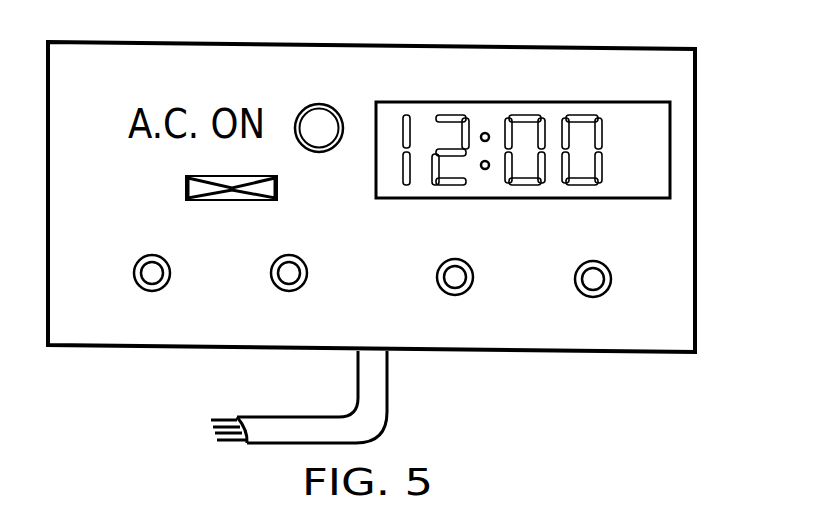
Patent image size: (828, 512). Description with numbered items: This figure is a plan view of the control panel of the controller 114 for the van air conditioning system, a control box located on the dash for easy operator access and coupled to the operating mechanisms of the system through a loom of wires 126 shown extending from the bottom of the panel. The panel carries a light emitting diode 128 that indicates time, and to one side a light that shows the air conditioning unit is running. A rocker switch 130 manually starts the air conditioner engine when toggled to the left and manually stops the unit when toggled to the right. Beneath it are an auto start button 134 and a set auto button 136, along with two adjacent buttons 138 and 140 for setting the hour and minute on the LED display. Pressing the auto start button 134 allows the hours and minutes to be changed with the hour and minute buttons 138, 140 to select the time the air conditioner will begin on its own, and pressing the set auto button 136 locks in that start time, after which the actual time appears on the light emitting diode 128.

The controller 114 is at (682, 58).
The loom of wires 126 is at (337, 430).
The light emitting diode 128 is at (452, 117).
The rocker switch 130 is at (192, 188).
The auto start button 134 is at (152, 276).
The set auto button 136 is at (289, 276).
The hour button 138 is at (455, 280).
The minute button 140 is at (597, 283).